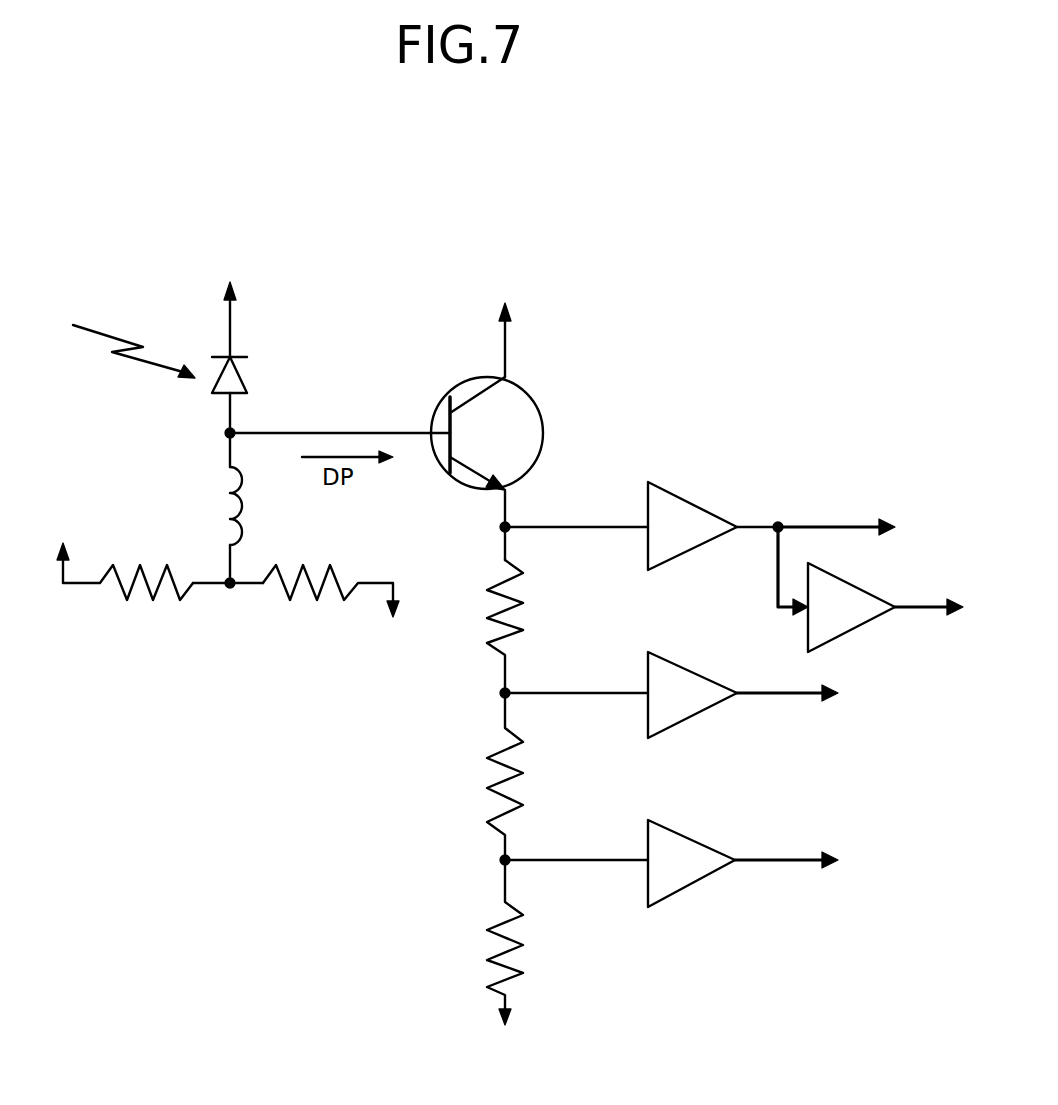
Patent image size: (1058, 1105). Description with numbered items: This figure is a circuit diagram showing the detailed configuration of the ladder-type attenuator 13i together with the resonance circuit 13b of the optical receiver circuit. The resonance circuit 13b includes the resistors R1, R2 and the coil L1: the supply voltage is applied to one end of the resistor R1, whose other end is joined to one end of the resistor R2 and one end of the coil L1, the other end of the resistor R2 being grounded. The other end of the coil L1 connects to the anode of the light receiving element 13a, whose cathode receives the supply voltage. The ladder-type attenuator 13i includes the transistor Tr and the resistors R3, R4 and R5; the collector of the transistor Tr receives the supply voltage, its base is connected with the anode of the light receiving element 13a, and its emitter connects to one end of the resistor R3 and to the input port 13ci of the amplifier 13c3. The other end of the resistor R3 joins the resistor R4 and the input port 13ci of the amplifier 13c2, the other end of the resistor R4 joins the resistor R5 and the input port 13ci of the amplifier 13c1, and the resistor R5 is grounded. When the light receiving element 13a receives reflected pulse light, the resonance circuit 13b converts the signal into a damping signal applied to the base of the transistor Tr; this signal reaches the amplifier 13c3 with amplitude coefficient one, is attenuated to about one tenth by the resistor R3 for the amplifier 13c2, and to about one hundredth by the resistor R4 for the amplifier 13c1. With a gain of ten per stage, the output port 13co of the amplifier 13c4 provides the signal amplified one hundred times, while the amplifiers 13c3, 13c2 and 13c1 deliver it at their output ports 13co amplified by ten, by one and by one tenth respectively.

The light receiving element 13a is at (248, 378).
The resonance circuit 13b is at (232, 600).
The ladder-type attenuator 13i is at (537, 414).
The transistor Tr is at (543, 433).
The coil L1 is at (250, 522).
The resistor R1 is at (145, 600).
The resistor R2 is at (313, 600).
The resistor R3 is at (523, 600).
The resistor R4 is at (525, 767).
The resistor R5 is at (518, 933).
The amplifier 13c1 is at (685, 852).
The amplifier 13c2 is at (683, 688).
The amplifier 13c3 is at (683, 518).
The amplifier 13c4 is at (860, 600).
The input port 13ci is at (643, 532).
The output port 13co is at (735, 528).